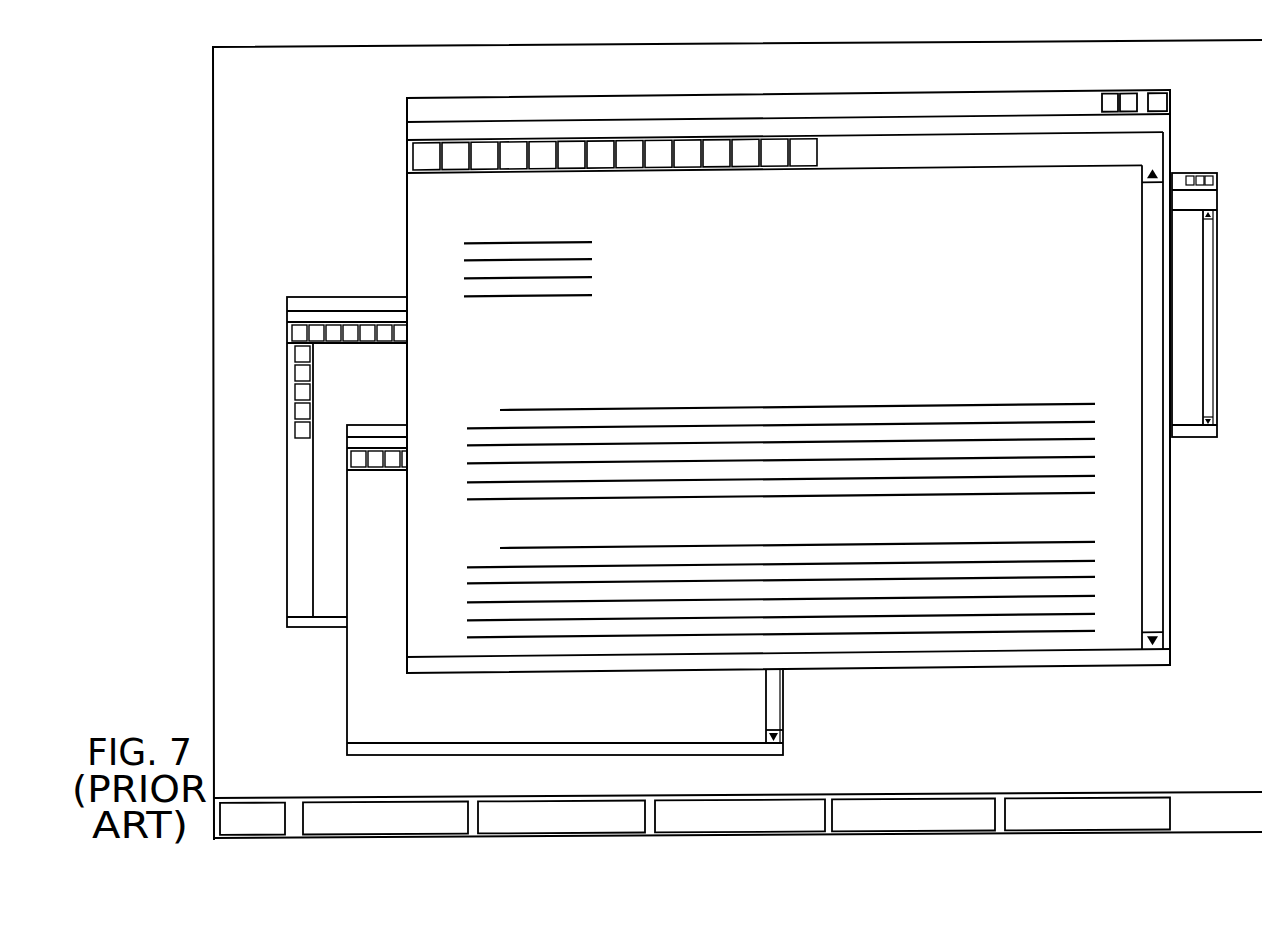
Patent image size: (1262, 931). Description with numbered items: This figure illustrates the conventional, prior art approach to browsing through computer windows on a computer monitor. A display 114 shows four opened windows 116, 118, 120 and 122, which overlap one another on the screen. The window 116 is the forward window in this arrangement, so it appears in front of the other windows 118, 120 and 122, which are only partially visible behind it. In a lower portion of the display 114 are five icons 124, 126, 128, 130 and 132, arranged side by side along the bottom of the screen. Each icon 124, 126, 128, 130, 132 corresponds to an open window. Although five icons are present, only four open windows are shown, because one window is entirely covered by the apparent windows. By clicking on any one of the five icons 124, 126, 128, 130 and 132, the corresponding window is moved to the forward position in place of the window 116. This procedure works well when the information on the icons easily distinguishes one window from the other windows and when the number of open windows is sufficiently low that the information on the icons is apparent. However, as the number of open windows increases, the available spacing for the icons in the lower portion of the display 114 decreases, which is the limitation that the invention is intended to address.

The display 114 is at (150, 238).
The window 116 is at (420, 228).
The window 118 is at (303, 294).
The window 120 is at (360, 680).
The window 122 is at (1196, 296).
The icon 124 is at (310, 838).
The icon 126 is at (495, 838).
The icon 128 is at (668, 838).
The icon 130 is at (845, 838).
The icon 132 is at (1020, 838).